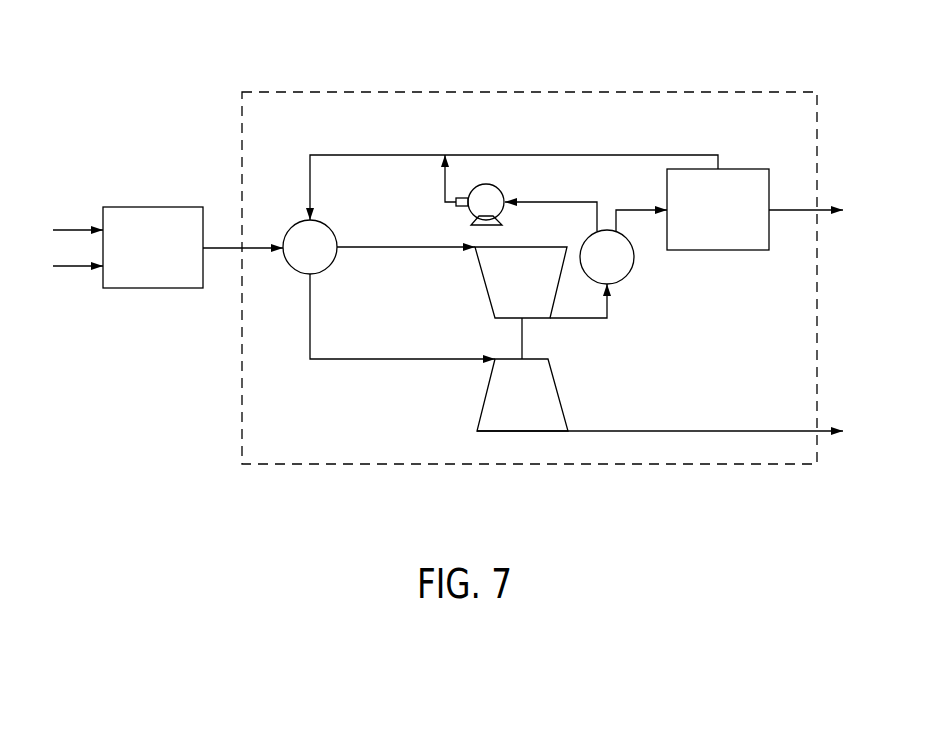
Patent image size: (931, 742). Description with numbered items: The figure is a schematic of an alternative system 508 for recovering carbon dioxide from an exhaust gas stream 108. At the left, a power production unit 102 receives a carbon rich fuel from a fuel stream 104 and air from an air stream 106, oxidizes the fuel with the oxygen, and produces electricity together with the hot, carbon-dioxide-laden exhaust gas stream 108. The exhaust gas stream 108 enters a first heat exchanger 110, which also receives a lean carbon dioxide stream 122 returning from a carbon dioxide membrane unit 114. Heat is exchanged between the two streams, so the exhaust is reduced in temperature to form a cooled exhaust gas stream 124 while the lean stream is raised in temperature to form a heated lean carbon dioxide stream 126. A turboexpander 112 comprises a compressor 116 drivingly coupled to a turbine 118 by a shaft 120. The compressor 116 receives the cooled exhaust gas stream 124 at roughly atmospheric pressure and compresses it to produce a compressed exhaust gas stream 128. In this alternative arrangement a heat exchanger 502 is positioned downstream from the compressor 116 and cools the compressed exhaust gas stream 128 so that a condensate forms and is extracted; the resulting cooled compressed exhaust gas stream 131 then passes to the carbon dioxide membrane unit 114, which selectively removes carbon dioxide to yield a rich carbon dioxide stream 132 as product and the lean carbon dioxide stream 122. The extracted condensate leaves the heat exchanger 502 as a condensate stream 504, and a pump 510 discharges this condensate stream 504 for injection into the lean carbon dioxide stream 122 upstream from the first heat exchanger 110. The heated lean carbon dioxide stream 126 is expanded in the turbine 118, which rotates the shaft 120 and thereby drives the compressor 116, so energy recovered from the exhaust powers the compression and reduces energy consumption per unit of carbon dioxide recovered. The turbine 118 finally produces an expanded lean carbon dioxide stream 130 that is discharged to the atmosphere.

The power production unit 102 is at (153, 247).
The fuel stream 104 is at (67, 230).
The air stream 106 is at (67, 266).
The exhaust gas stream 108 is at (227, 248).
The first heat exchanger 110 is at (310, 247).
The turboexpander 112 is at (457, 395).
The carbon dioxide membrane unit 114 is at (718, 209).
The compressor 116 is at (521, 282).
The turbine 118 is at (522, 395).
The shaft 120 is at (522, 338).
The lean carbon dioxide stream 122 is at (347, 155).
The cooled exhaust gas stream 124 is at (367, 247).
The heated lean carbon dioxide stream 126 is at (367, 359).
The compressed exhaust gas stream 128 is at (612, 312).
The expanded lean carbon dioxide stream 130 is at (673, 431).
The cooled compressed exhaust gas stream 131 is at (640, 209).
The rich carbon dioxide stream 132 is at (792, 210).
The heat exchanger 502 is at (607, 257).
The condensate stream 504 is at (537, 202).
The alternative system 508 is at (478, 60).
The pump 510 is at (488, 184).